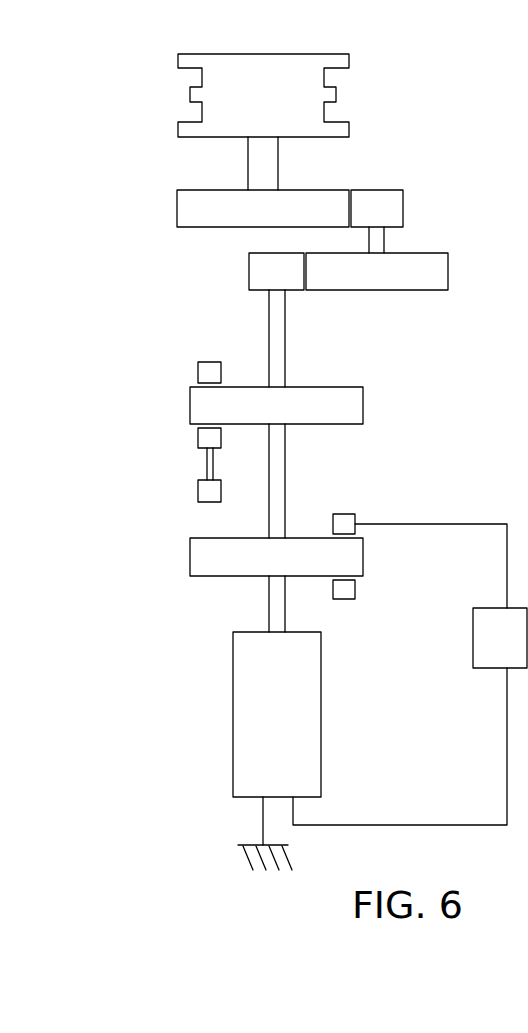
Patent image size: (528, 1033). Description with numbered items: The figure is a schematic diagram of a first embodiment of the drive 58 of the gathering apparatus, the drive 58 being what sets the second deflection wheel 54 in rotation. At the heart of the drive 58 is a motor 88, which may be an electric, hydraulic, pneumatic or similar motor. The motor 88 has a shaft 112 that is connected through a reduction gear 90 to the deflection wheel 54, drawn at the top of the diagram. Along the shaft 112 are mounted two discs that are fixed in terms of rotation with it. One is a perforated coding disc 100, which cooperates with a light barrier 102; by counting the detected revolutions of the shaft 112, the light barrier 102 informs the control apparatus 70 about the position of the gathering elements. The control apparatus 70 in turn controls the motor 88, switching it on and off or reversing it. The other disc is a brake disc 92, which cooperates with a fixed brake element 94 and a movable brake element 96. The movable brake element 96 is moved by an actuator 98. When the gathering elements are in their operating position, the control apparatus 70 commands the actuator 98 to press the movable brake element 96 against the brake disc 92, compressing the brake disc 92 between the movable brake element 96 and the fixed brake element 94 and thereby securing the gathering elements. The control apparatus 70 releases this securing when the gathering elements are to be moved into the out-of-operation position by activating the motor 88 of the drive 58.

The second deflection wheel 54 is at (336, 91).
The drive 58 is at (220, 817).
The control apparatus 70 is at (522, 655).
The motor 88 is at (294, 724).
The reduction gear 90 is at (426, 210).
The brake disc 92 is at (347, 404).
The fixed brake element 94 is at (198, 368).
The movable brake element 96 is at (198, 436).
The actuator 98 is at (198, 490).
The perforated coding disc 100 is at (207, 560).
The light barrier 102 is at (363, 506).
The shaft 112 is at (275, 460).